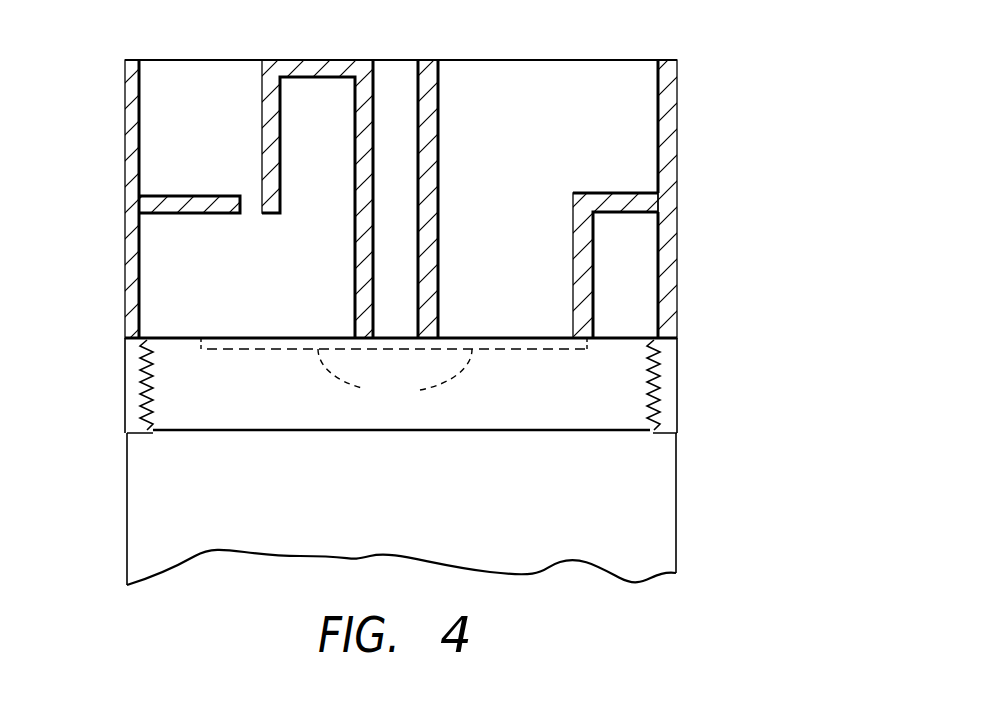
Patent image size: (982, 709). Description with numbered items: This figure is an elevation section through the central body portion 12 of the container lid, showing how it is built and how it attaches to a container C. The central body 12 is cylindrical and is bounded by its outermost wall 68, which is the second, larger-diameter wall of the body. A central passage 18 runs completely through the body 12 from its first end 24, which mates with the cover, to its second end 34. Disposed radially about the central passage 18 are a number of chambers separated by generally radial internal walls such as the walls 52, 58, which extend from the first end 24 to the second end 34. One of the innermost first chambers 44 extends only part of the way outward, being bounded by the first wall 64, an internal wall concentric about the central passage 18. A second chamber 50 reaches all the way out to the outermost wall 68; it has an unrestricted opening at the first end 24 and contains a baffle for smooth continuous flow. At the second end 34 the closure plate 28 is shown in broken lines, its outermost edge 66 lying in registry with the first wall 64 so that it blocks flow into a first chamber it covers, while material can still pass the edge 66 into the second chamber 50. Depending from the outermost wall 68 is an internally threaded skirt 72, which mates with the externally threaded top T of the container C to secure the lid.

The central body portion 12 is at (722, 253).
The central passage 18 is at (407, 190).
The first end 24 is at (197, 60).
The closure plate 28 is at (395, 378).
The second end 34 is at (183, 342).
The first chamber 44 is at (520, 213).
The second chamber 50 is at (167, 242).
The radially disposed wall 52 is at (572, 89).
The radially disposed wall 58 is at (257, 272).
The first wall 64 is at (573, 275).
The outermost edge of the closure plate 66 is at (205, 347).
The outermost wall 68 is at (126, 128).
The internally threaded skirt 72 is at (677, 394).
The externally threaded top T is at (637, 338).
The container C is at (677, 537).